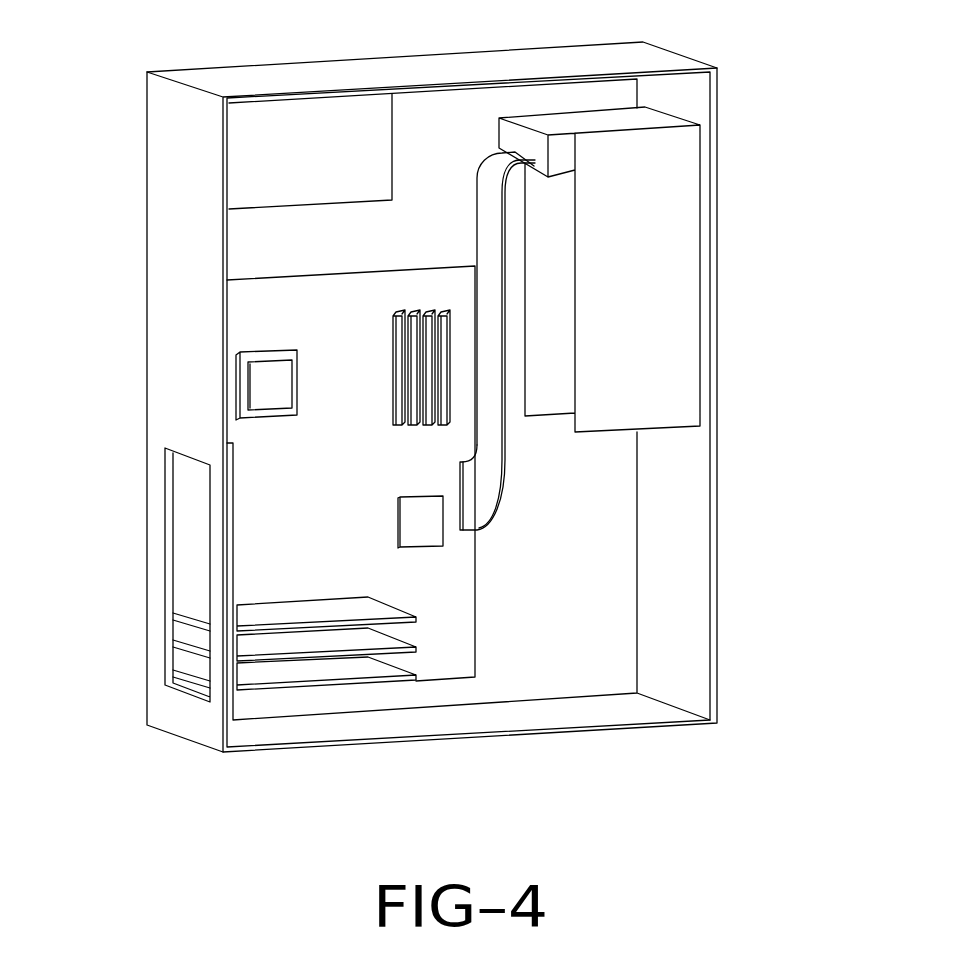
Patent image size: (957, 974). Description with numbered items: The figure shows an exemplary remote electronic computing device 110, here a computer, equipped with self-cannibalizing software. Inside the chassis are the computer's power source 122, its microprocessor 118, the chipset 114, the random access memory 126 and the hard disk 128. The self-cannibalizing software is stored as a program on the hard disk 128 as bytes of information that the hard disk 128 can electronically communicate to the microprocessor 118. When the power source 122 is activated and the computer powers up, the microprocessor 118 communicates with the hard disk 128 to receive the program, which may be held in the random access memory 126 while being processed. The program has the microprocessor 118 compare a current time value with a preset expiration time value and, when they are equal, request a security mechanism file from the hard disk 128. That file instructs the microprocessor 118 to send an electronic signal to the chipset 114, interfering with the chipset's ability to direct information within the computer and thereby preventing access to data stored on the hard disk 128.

The remote electronic computing device 110 is at (716, 622).
The chipset 114 is at (435, 525).
The microprocessor 118 is at (267, 370).
The power source 122 is at (265, 150).
The random access memory 126 is at (405, 415).
The hard disk 128 is at (563, 148).